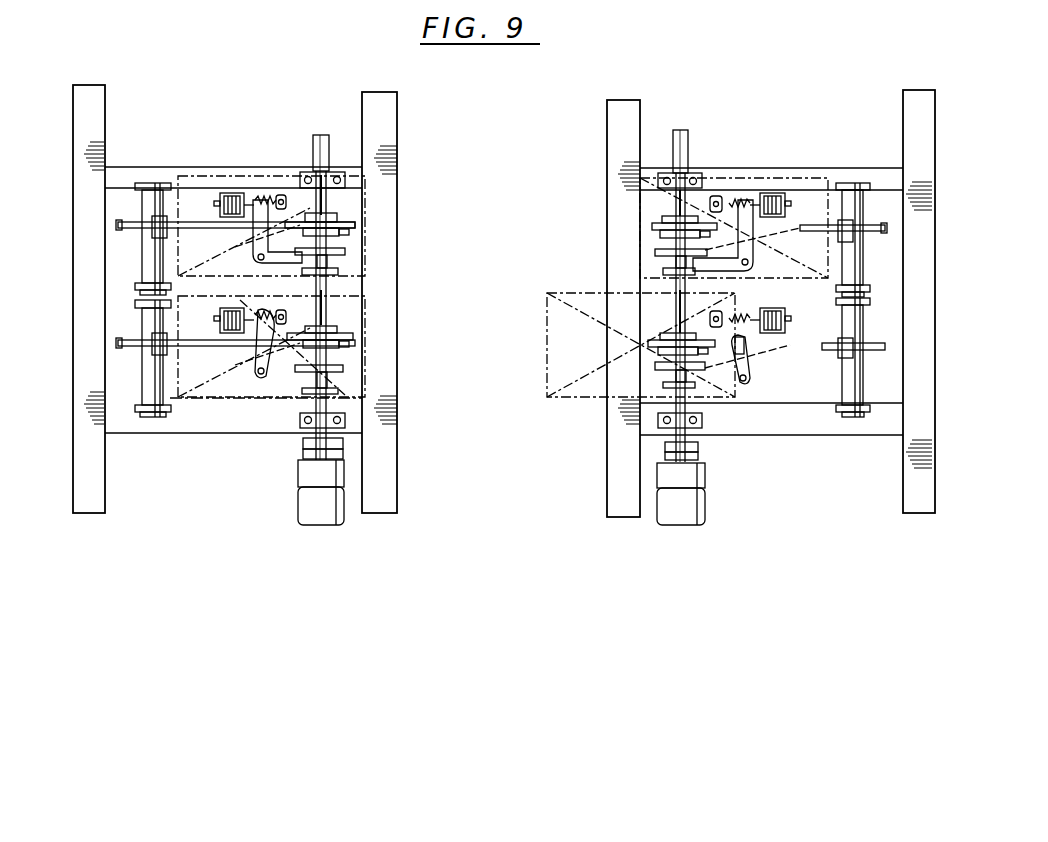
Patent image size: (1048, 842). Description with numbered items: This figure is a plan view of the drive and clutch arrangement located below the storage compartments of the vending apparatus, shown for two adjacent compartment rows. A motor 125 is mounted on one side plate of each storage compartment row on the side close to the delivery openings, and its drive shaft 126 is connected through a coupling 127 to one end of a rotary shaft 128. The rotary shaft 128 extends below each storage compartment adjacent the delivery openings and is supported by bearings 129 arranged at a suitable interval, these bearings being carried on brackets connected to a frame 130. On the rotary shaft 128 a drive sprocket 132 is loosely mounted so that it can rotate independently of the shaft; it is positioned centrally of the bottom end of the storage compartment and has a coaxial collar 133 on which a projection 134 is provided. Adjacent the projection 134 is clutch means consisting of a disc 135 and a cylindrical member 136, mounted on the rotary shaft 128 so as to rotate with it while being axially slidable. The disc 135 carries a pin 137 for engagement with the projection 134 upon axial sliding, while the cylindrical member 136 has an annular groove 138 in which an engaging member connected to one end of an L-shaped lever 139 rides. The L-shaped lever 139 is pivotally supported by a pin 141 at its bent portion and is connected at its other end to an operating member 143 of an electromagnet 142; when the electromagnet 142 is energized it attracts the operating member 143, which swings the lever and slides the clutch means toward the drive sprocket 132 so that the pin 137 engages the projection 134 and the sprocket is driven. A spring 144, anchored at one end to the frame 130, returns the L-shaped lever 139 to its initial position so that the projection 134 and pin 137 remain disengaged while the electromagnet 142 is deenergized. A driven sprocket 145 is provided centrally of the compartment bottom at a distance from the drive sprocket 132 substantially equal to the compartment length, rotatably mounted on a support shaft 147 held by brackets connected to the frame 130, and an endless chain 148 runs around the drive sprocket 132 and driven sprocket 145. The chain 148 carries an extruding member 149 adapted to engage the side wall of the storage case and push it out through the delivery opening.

The motor 125 is at (305, 506).
The drive shaft 126 is at (345, 448).
The coupling 127 is at (305, 452).
The rotary shaft 128 is at (322, 135).
The bearings 129 is at (305, 176).
The frame 130 is at (137, 170).
The drive sprocket 132 is at (355, 225).
The collar 133 is at (335, 215).
The projection 134 is at (349, 233).
The disc 135 is at (345, 251).
The cylindrical member 136 is at (338, 271).
The pin 137 is at (328, 215).
The annular groove 138 is at (330, 258).
The L-shaped lever 139 is at (245, 237).
The pin 141 is at (255, 258).
The electromagnet 142 is at (226, 193).
The operating member 143 is at (262, 197).
The spring 144 is at (268, 197).
The driven sprocket 145 is at (120, 225).
The support shaft 147 is at (148, 252).
The endless chain 148 is at (185, 222).
The extruding member 149 is at (150, 218).